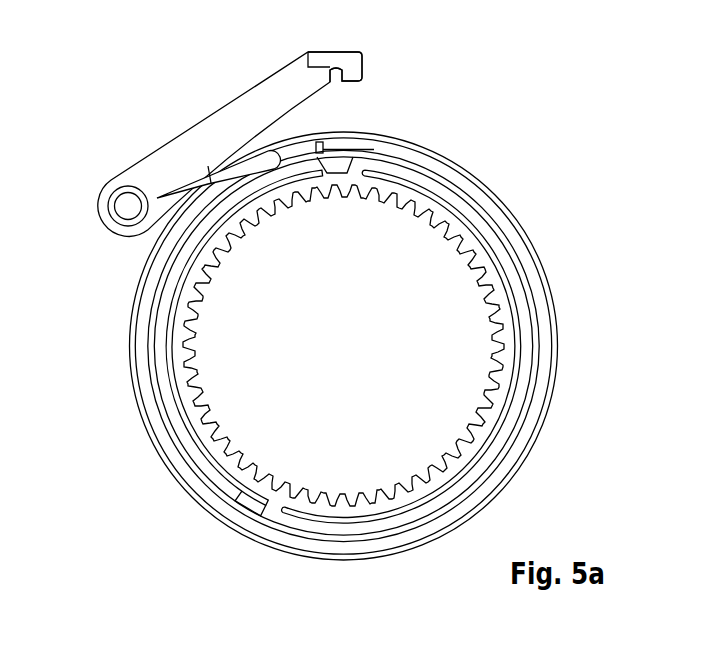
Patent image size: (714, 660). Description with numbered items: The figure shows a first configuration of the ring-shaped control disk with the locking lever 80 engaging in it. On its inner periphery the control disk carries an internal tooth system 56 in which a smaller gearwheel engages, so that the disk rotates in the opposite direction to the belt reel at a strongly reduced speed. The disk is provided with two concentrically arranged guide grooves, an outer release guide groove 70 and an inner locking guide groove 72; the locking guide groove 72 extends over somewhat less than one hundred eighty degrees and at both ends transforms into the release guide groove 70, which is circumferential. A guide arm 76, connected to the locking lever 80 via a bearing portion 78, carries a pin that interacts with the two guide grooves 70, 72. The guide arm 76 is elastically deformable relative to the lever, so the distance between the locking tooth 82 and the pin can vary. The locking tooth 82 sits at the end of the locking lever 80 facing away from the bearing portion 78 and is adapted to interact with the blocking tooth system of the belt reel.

The internal tooth system 56 is at (296, 488).
The release guide groove 70 is at (149, 286).
The locking guide groove 72 is at (163, 332).
The guide arm 76 is at (200, 193).
The bearing portion 78 is at (124, 207).
The locking lever 80 is at (258, 103).
The locking tooth 82 is at (345, 67).